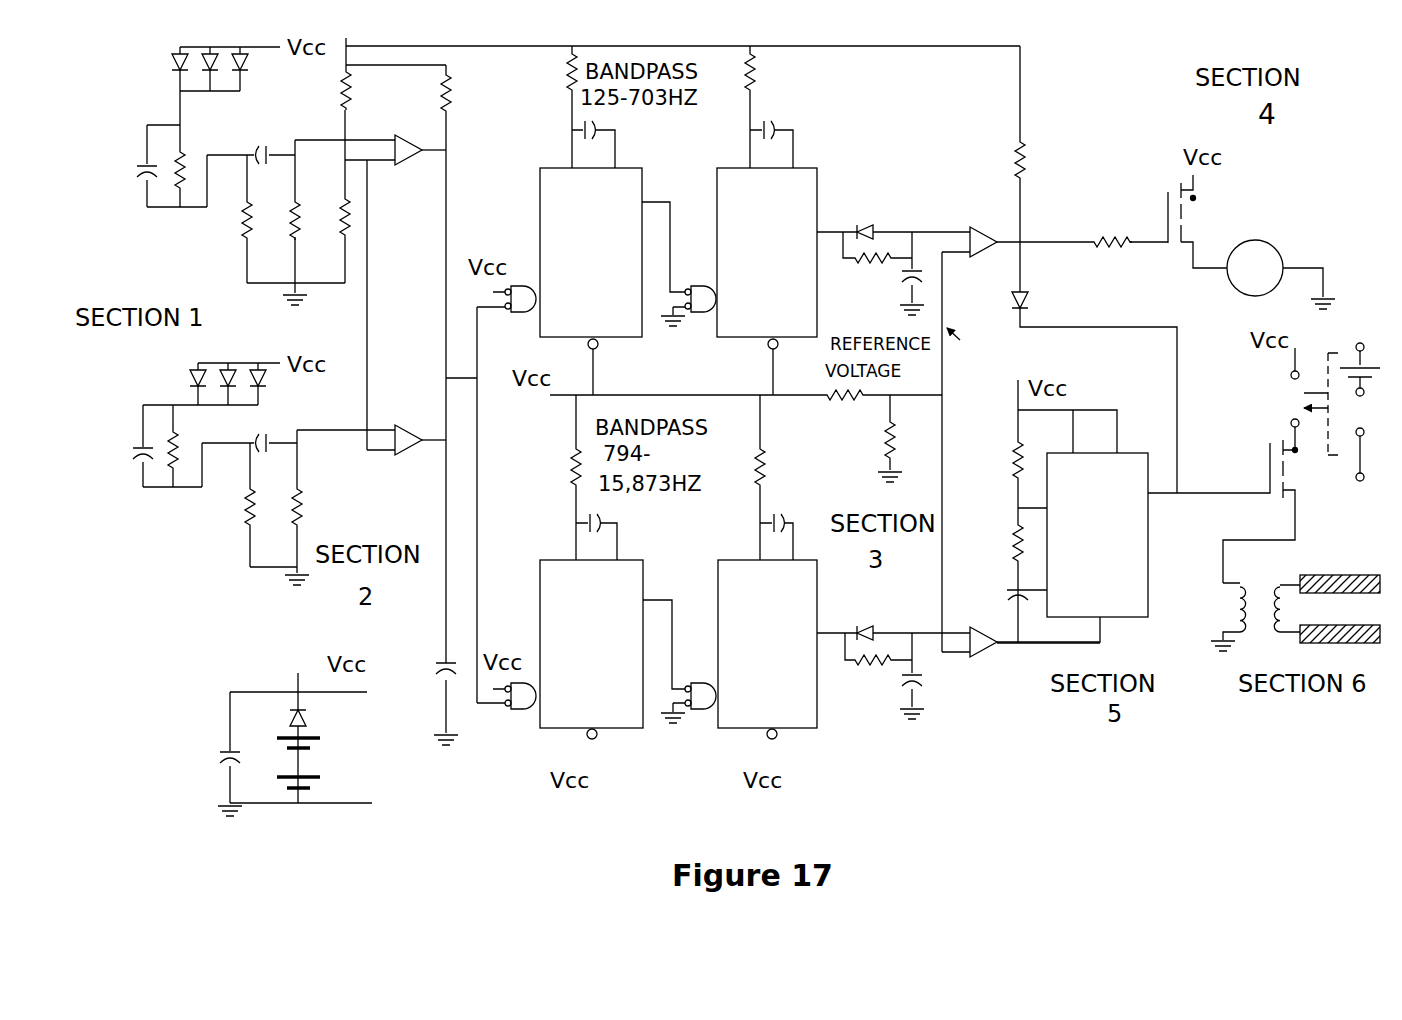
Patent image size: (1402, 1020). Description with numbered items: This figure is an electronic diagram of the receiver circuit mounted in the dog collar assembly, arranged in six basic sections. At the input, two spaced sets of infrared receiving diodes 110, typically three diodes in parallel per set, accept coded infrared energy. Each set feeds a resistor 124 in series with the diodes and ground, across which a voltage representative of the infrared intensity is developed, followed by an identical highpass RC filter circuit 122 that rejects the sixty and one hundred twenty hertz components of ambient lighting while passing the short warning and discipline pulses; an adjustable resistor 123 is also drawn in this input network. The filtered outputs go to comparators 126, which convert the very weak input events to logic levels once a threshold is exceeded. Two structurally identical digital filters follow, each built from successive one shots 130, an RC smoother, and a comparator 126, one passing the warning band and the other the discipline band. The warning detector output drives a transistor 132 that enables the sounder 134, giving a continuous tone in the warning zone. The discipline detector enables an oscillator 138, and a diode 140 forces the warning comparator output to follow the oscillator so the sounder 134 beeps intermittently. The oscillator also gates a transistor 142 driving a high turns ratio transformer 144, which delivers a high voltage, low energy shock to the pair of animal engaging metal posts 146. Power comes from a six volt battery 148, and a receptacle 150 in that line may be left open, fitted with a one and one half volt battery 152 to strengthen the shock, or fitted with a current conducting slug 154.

The photodetector diode array 110 is at (170, 73).
The highpass RC filter circuit 122 is at (281, 240).
The adjustable resistor 123 is at (355, 226).
The resistor 124 is at (236, 231).
The comparator 126 is at (398, 130).
The one shot 130 is at (631, 392).
The transistor 132 is at (1168, 188).
The sounder 134 is at (1236, 287).
The oscillator 138 is at (1072, 511).
The diode 140 is at (1045, 295).
The transistor 142 is at (1266, 460).
The high turns ratio transformer 144 is at (1228, 612).
The animal engaging metal posts 146 is at (1340, 609).
The six volt battery 148 is at (258, 688).
The 1.5 volt battery receiving receptacle 150 is at (1277, 420).
The 1.5 volt battery 152 is at (1362, 353).
The current conducting slug 154 is at (1354, 476).